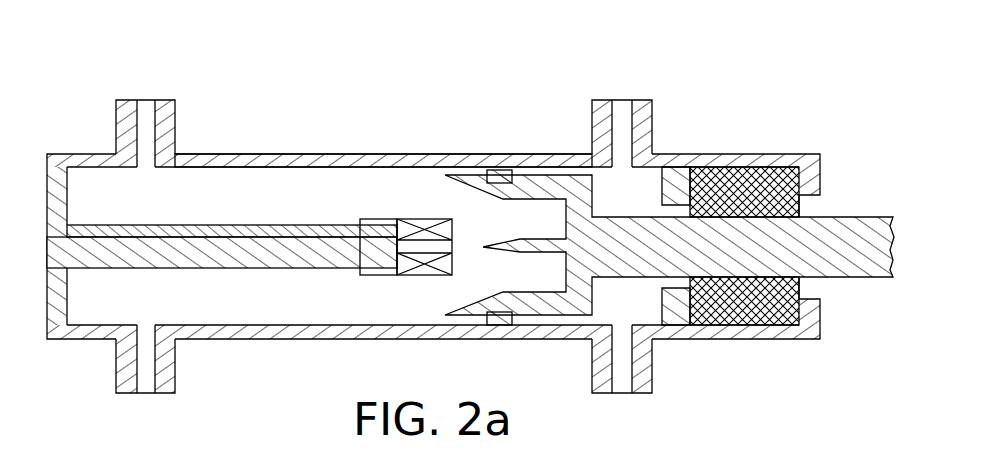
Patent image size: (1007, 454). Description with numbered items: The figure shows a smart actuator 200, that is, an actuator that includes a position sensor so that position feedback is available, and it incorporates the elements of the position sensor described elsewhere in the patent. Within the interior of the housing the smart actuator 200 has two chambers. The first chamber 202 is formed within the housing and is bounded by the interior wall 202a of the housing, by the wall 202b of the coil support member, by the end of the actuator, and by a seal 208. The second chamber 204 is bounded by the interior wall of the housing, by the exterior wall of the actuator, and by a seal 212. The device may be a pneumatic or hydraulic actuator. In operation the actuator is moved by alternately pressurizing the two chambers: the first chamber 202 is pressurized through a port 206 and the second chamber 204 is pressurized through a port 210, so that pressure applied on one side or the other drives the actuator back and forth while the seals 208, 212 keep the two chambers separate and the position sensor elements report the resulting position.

The smart actuator 200 is at (738, 63).
The chamber 202 is at (303, 312).
The interior wall of the housing 202a is at (354, 173).
The coil support member wall 202b is at (117, 225).
The chamber 204 is at (652, 313).
The port 206 is at (146, 108).
The seal 208 is at (495, 170).
The port 210 is at (622, 108).
The seal 212 is at (748, 298).